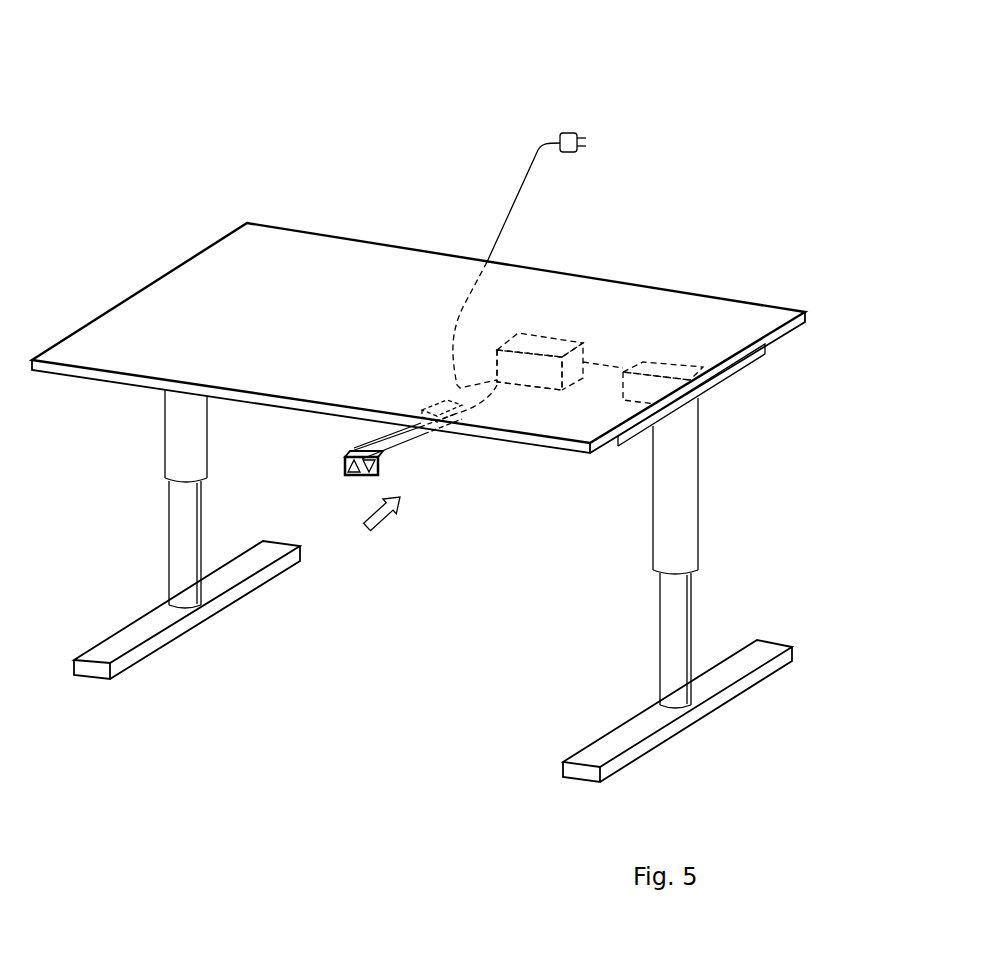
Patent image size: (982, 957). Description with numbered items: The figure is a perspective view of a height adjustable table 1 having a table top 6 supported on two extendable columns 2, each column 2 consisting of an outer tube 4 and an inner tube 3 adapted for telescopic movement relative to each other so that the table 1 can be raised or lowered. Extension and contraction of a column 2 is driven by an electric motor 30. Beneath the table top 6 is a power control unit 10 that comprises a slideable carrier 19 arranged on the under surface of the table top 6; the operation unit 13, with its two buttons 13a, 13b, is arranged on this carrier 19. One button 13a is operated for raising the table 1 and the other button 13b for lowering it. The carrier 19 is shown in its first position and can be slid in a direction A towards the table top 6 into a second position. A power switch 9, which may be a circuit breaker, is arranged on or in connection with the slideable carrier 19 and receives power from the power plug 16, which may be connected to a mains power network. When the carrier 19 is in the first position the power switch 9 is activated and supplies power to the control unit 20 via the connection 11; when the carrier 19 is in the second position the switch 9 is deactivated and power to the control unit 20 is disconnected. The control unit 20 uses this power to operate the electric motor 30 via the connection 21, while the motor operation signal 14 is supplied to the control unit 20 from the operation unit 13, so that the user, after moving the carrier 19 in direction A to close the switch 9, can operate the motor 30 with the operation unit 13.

The height adjustable table 1 is at (427, 401).
The extendable column 2 is at (448, 586).
The inner tube 3 is at (660, 633).
The outer tube 4 is at (656, 530).
The table top 6 is at (172, 268).
The power switch 9 is at (420, 403).
The power control unit 10 is at (422, 390).
The connection 11 is at (480, 376).
The operation unit 13 is at (357, 502).
The button 13a is at (345, 466).
The button 13b is at (380, 472).
The motor operation signal 14 is at (482, 412).
The power plug 16 is at (569, 133).
The slideable carrier 19 is at (352, 447).
The control unit 20 is at (565, 392).
The connection 21 is at (598, 360).
The electric motor 30 is at (684, 362).
The direction A is at (384, 528).